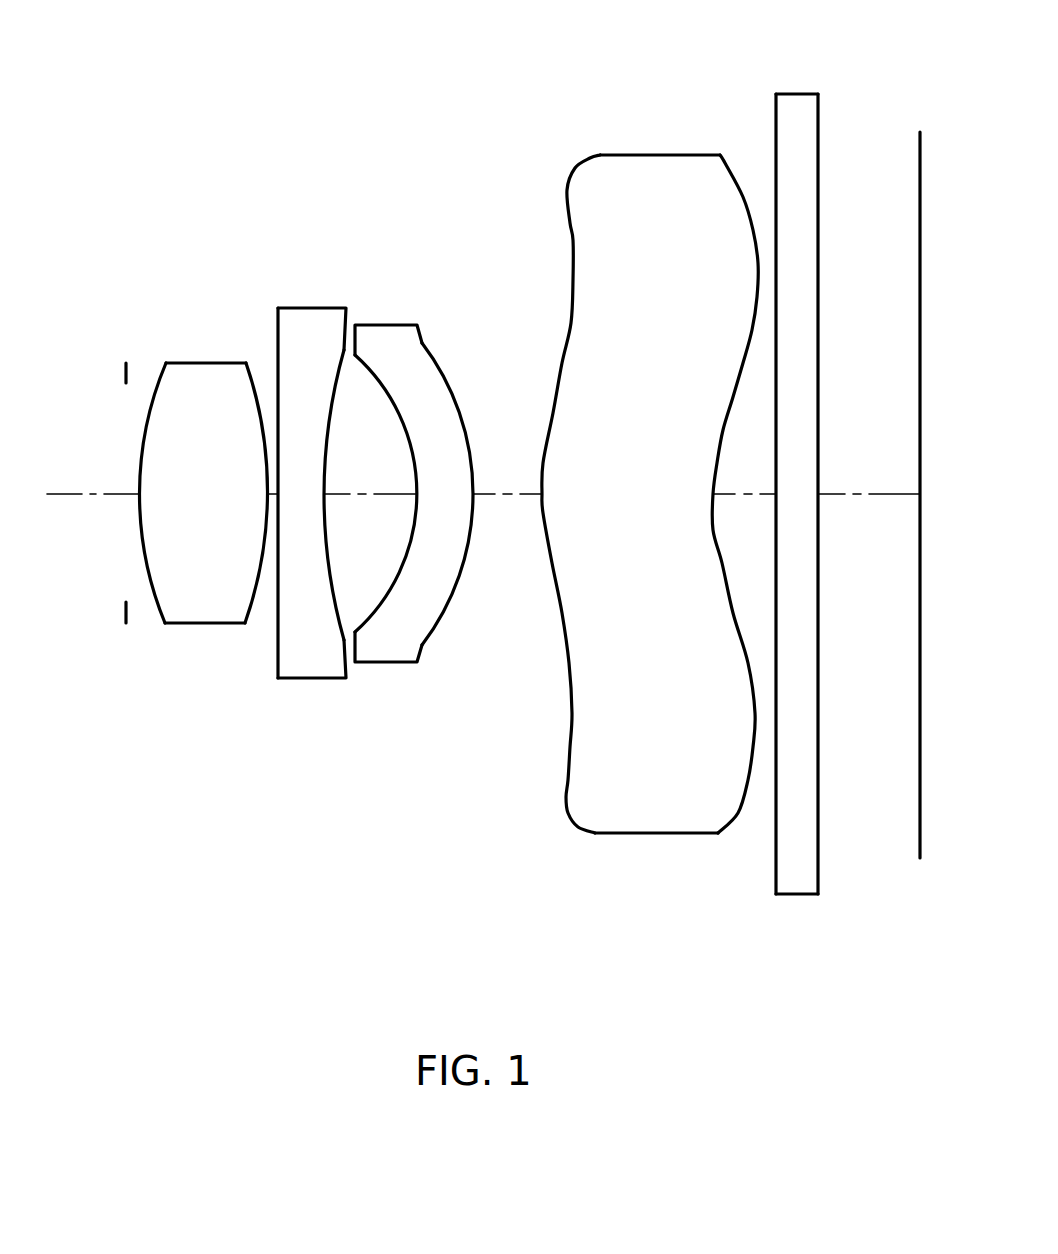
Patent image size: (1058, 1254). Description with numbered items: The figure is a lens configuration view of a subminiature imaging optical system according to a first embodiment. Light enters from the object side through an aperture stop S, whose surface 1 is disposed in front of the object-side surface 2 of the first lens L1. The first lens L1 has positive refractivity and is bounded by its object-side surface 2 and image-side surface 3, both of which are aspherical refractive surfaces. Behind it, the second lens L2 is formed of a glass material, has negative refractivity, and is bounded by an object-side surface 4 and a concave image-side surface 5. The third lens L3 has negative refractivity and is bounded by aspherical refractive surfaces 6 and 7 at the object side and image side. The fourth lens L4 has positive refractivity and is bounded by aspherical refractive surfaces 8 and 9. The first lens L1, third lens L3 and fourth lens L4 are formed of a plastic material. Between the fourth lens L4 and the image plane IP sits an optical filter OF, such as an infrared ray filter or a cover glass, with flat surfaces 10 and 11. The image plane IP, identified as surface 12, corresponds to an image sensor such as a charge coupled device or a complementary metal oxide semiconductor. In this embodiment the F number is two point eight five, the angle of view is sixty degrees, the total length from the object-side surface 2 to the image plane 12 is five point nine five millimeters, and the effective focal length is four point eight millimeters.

The aperture stop S is at (127, 360).
The first lens L1 is at (198, 363).
The second lens L2 is at (300, 308).
The third lens L3 is at (378, 326).
The fourth lens L4 is at (655, 156).
The optical filter OF is at (791, 95).
The image plane IP is at (919, 134).
The aperture stop surface 1 is at (126, 622).
The object-side surface of first lens 2 is at (165, 607).
The image-side surface of first lens 3 is at (258, 612).
The object-side surface of second lens 4 is at (277, 668).
The image-side surface of second lens 5 is at (352, 673).
The object-side surface of third lens 6 is at (363, 606).
The image-side surface of third lens 7 is at (428, 637).
The object-side surface of fourth lens 8 is at (568, 770).
The image-side surface of fourth lens 9 is at (738, 818).
The object-side surface of optical filter 10 is at (775, 888).
The image-side surface of optical filter 11 is at (818, 878).
The image plane 12 is at (918, 853).